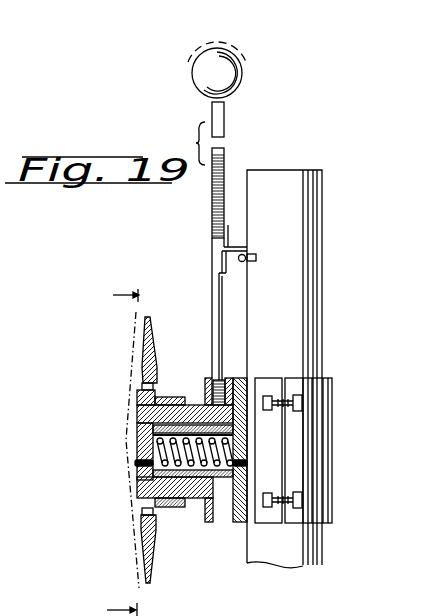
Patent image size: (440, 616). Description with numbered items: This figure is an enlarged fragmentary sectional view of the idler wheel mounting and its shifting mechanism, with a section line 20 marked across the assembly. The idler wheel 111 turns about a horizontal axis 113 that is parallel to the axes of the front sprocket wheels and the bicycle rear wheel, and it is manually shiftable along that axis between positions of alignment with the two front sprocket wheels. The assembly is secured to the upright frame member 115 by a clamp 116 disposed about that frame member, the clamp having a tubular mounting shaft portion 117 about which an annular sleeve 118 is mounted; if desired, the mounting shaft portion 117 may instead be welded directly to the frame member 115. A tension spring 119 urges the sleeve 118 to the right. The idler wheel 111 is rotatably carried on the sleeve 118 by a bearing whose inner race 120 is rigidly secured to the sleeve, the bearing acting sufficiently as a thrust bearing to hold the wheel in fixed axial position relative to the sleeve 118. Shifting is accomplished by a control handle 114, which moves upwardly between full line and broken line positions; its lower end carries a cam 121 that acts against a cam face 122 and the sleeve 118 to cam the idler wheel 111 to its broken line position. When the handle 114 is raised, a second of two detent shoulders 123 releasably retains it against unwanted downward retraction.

The section line 20- 20 is at (112, 445).
The idler wheel 111 is at (146, 565).
The horizontal axis 113 is at (135, 452).
The control handle 114 is at (212, 234).
The upright frame member 115 is at (322, 203).
The clamp 116 is at (333, 396).
The tubular mounting shaft portion 117 is at (160, 418).
The annular sleeve 118 is at (142, 490).
The tension spring 119 is at (155, 447).
The inner race 120 is at (142, 509).
The cam 121 is at (208, 405).
The cam face 122 is at (222, 383).
The detent shoulders 123 is at (219, 279).